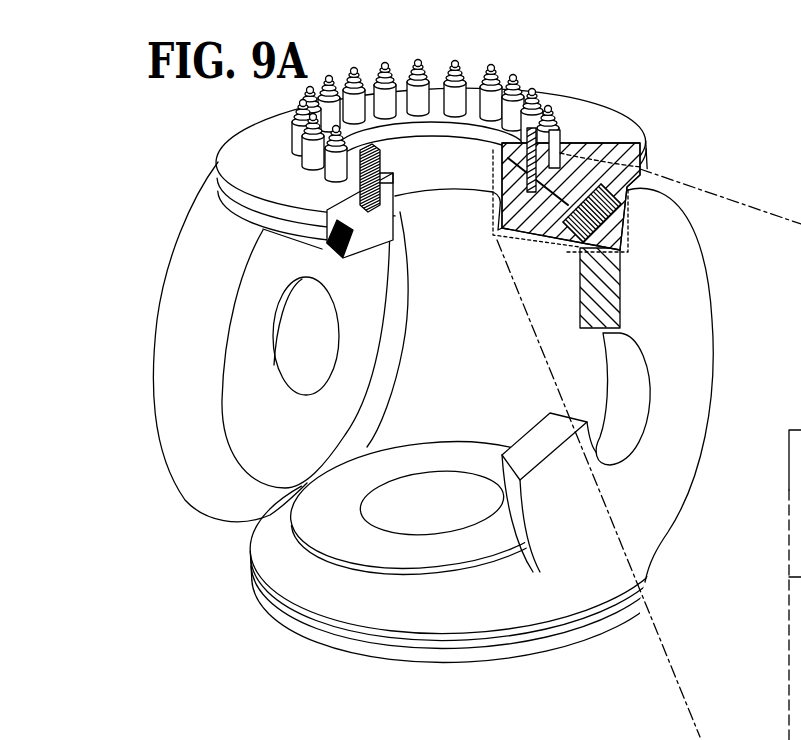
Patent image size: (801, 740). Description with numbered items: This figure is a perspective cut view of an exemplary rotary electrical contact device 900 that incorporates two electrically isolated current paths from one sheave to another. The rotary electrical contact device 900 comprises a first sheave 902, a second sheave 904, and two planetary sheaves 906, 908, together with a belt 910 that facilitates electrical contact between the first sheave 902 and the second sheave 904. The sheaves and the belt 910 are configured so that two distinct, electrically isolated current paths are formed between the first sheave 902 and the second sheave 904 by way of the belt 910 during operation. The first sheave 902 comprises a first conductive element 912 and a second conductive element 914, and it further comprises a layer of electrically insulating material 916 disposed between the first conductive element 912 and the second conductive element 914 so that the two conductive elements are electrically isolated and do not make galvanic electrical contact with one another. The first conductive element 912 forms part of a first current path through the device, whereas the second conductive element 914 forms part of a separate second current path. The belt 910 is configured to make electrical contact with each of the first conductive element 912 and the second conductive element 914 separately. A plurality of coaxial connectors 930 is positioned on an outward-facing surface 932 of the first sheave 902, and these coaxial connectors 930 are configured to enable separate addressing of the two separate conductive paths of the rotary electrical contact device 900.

The rotary electrical contact device 900 is at (716, 64).
The first sheave 902 is at (603, 127).
The second sheave 904 is at (397, 662).
The planetary sheave 906 is at (368, 362).
The planetary sheave 908 is at (703, 343).
The belt 910 is at (347, 257).
The first conductive element 912 is at (523, 227).
The second conductive element 914 is at (608, 177).
The layer of electrically insulating material 916 is at (353, 213).
The coaxial connectors 930 is at (513, 86).
The outward-facing surface 932 is at (607, 101).